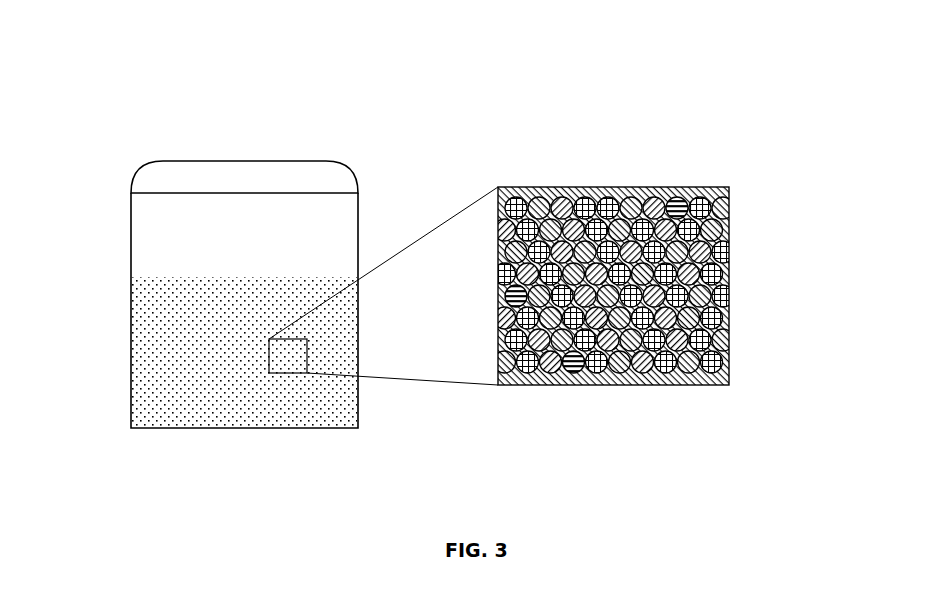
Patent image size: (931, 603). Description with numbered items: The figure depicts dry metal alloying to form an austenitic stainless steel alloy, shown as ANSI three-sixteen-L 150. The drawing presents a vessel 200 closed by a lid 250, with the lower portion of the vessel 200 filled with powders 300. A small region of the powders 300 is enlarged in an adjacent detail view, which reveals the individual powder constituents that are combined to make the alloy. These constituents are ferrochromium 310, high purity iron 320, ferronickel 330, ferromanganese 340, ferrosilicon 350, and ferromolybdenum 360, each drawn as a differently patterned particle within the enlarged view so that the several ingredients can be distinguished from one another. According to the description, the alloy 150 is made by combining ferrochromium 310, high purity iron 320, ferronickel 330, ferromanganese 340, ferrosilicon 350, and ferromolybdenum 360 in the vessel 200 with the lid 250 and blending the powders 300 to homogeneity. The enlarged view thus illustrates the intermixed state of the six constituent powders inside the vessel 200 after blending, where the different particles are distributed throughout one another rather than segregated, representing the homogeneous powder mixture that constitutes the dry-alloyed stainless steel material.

The ANSI 316L 150 is at (281, 245).
The vessel 200 is at (358, 405).
The lid 250 is at (332, 174).
The powders 300 is at (168, 322).
The ferrochromium 310 is at (608, 207).
The high purity iron 320 is at (656, 208).
The ferronickel 330 is at (708, 210).
The ferromanganese 340 is at (708, 315).
The ferrosilicon 350 is at (660, 283).
The ferromolybdenum 360 is at (570, 366).